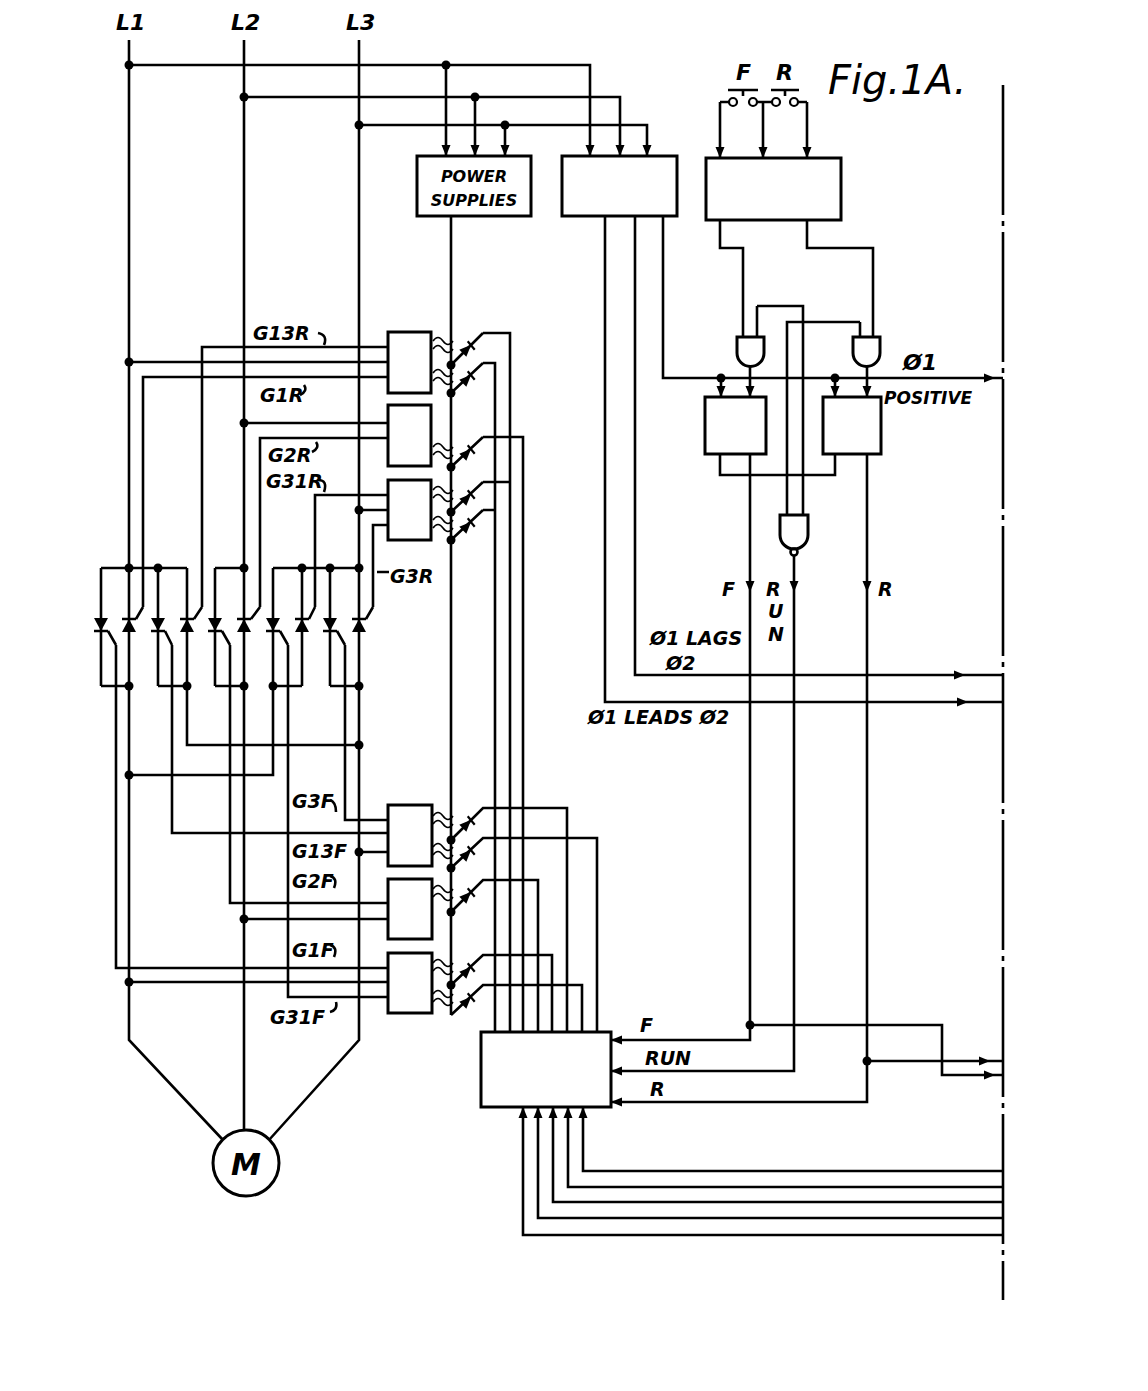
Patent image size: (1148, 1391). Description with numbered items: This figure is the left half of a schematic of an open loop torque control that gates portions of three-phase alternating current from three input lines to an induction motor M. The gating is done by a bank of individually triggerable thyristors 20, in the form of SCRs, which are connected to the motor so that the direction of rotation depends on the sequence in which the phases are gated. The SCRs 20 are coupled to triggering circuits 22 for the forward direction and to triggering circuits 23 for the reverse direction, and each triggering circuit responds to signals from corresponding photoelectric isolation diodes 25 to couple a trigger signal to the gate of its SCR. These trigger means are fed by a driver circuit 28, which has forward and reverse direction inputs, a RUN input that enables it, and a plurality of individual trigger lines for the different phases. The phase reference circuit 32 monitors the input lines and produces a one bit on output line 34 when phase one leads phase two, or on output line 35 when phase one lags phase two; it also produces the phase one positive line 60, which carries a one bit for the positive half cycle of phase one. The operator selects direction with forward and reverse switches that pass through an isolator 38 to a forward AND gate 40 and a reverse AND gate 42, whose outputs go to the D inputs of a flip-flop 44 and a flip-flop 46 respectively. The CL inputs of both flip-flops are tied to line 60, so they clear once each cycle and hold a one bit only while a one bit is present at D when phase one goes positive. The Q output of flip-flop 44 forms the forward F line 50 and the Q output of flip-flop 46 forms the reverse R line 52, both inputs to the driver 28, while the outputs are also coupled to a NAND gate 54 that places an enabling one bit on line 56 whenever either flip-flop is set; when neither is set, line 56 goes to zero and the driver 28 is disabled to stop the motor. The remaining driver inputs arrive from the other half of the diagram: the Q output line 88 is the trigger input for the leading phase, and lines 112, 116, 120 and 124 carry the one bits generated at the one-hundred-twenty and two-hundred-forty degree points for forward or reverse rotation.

The thyristors 20 is at (410, 636).
The triggering circuits 22 is at (410, 795).
The triggering circuits 23 is at (406, 327).
The photoelectric isolation diodes 25 is at (475, 592).
The driver circuit 28 is at (481, 1091).
The phase reference circuit 32 is at (578, 218).
The output line 34 is at (605, 657).
The output line 35 is at (637, 575).
The isolator 38 is at (841, 192).
The forward AND gate 40 is at (737, 352).
The reverse AND gate 42 is at (877, 351).
The flip-flop 44 is at (705, 409).
The flip-flop 46 is at (881, 446).
The forward F line 50 is at (750, 528).
The reverse R line 52 is at (867, 512).
The NAND gate 54 is at (806, 540).
The line 56 is at (794, 615).
The phase one positive line 60 is at (665, 280).
The Q output line 88 is at (523, 1152).
The line 112 is at (602, 1220).
The output line 116 is at (768, 1186).
The output line 120 is at (717, 1204).
The output line 124 is at (854, 1171).